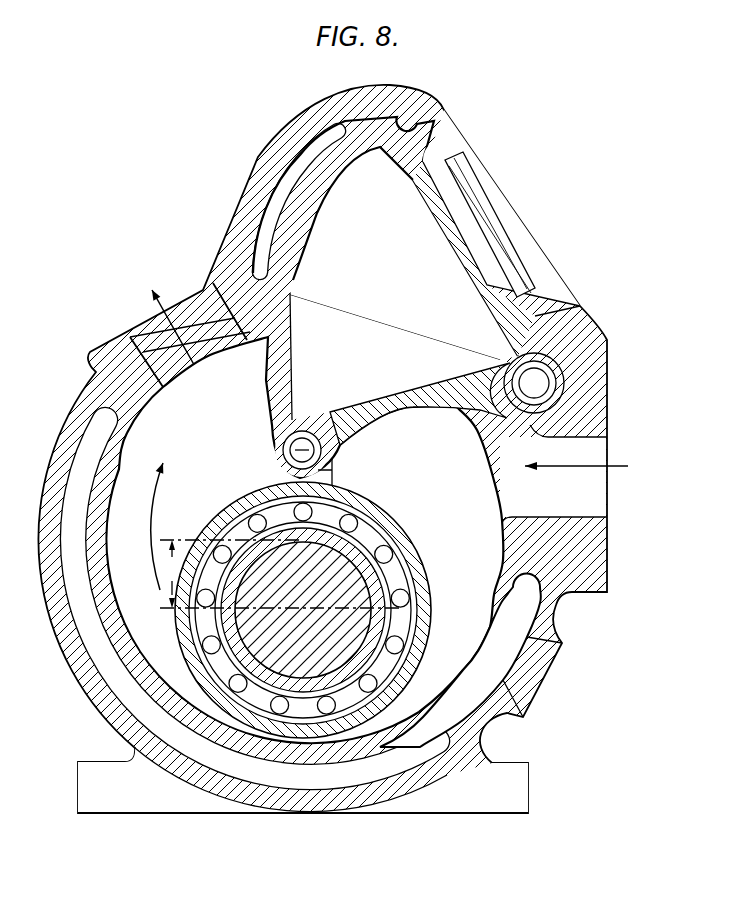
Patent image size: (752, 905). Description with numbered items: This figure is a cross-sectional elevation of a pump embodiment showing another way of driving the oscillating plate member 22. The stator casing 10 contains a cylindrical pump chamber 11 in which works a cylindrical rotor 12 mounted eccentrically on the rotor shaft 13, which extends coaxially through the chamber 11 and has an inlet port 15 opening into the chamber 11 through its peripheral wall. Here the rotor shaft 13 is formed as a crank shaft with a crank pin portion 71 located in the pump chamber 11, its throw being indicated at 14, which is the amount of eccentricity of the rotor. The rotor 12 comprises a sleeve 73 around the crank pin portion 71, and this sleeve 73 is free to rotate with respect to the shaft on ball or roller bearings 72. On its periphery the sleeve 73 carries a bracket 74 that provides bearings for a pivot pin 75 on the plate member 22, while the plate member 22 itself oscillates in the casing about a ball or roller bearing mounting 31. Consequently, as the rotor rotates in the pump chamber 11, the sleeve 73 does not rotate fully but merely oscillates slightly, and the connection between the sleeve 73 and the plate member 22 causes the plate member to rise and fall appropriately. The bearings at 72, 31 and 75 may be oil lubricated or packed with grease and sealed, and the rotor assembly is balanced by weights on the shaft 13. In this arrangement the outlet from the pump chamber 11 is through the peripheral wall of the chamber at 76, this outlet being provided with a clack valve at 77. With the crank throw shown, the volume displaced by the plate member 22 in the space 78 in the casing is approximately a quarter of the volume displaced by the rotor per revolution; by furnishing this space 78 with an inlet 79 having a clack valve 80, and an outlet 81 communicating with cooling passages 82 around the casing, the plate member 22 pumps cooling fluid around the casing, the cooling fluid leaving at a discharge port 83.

The stator casing 10 is at (458, 740).
The cylindrical pump chamber 11 is at (473, 602).
The cylindrical rotor 12 is at (387, 516).
The rotor shaft 13 is at (366, 481).
The eccentricity of the rotor 14 is at (278, 574).
The inlet port 15 is at (575, 503).
The plate member 22 is at (383, 412).
The ball or roller bearing mounting 31 is at (527, 403).
The crank pin portion 71 is at (345, 570).
The ball or roller bearings 72 is at (242, 543).
The sleeve 73 is at (423, 620).
The bracket 74 is at (333, 471).
The pivot pin 75 is at (290, 447).
The outlet 76 is at (160, 323).
The clack valve 77 is at (157, 340).
The space 78 is at (400, 266).
The inlet 79 is at (528, 262).
The clack valve 80 is at (488, 233).
The outlet 81 is at (332, 163).
The cooling passages 82 is at (297, 178).
The discharge port 83 is at (523, 678).